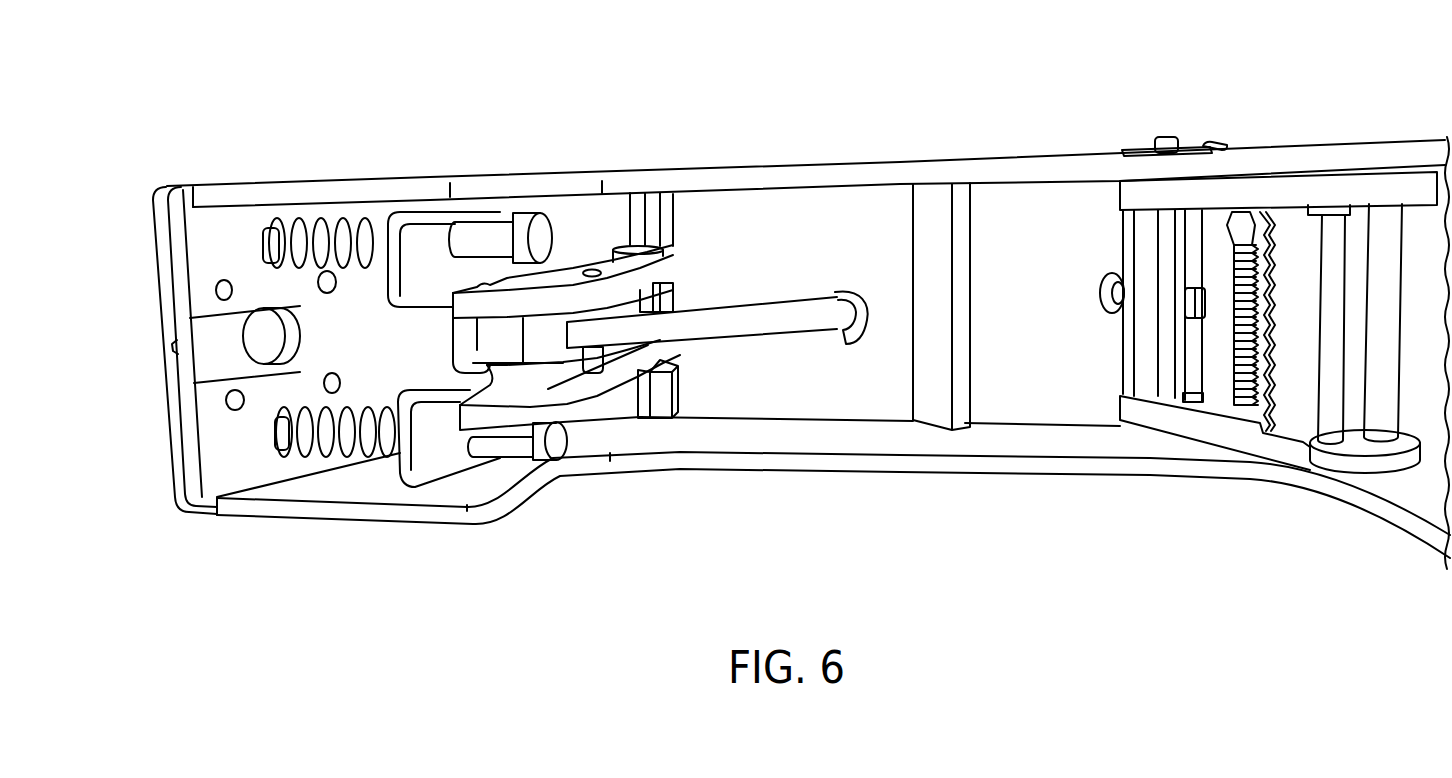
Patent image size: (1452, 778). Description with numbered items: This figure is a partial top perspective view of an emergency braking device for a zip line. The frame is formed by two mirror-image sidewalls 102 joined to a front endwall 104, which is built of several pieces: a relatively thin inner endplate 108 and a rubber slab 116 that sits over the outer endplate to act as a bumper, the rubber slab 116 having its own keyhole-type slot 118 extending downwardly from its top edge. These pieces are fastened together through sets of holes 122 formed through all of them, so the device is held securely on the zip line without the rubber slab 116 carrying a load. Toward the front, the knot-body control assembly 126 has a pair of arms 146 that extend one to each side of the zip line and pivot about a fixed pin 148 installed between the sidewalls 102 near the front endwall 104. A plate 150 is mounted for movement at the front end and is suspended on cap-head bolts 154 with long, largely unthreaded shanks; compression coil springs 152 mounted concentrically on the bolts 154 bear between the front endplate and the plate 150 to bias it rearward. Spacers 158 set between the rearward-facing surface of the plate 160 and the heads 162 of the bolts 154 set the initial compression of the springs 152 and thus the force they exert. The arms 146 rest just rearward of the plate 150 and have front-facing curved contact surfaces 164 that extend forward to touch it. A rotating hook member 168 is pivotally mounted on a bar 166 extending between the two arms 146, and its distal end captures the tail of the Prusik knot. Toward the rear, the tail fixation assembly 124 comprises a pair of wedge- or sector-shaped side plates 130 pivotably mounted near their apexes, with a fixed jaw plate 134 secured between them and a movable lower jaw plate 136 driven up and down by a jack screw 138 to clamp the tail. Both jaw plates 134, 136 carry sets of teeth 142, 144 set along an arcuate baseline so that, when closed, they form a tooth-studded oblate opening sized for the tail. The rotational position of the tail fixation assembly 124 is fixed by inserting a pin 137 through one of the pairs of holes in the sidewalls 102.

The sidewalls 102 is at (841, 171).
The front endwall 104 is at (170, 183).
The inner endplate 108 is at (193, 264).
The rubber slab 116 is at (160, 254).
The keyhole-type slot 118 is at (167, 349).
The holes 122 is at (225, 279).
The tail fixation assembly 124 is at (1188, 447).
The knot-body control assembly 126 is at (600, 247).
The side plates 130 is at (1270, 187).
The fixed jaw plate 134 is at (1306, 405).
The movable lower jaw plate 136 is at (1240, 212).
The pin 137 is at (1163, 136).
The jack screw 138 is at (1103, 287).
The teeth 142 is at (1275, 320).
The teeth 144 is at (1225, 323).
The arms 146 is at (633, 281).
The fixed pin 148 is at (645, 228).
The plate 150 is at (408, 486).
The compression coil springs 152 is at (295, 222).
The cap-head bolts 154 is at (340, 236).
The spacers 158 is at (488, 236).
The plate 160 is at (424, 247).
The heads 162 is at (547, 236).
The contact surfaces 164 is at (483, 283).
The bar 166 is at (678, 386).
The rotating hook member 168 is at (797, 311).